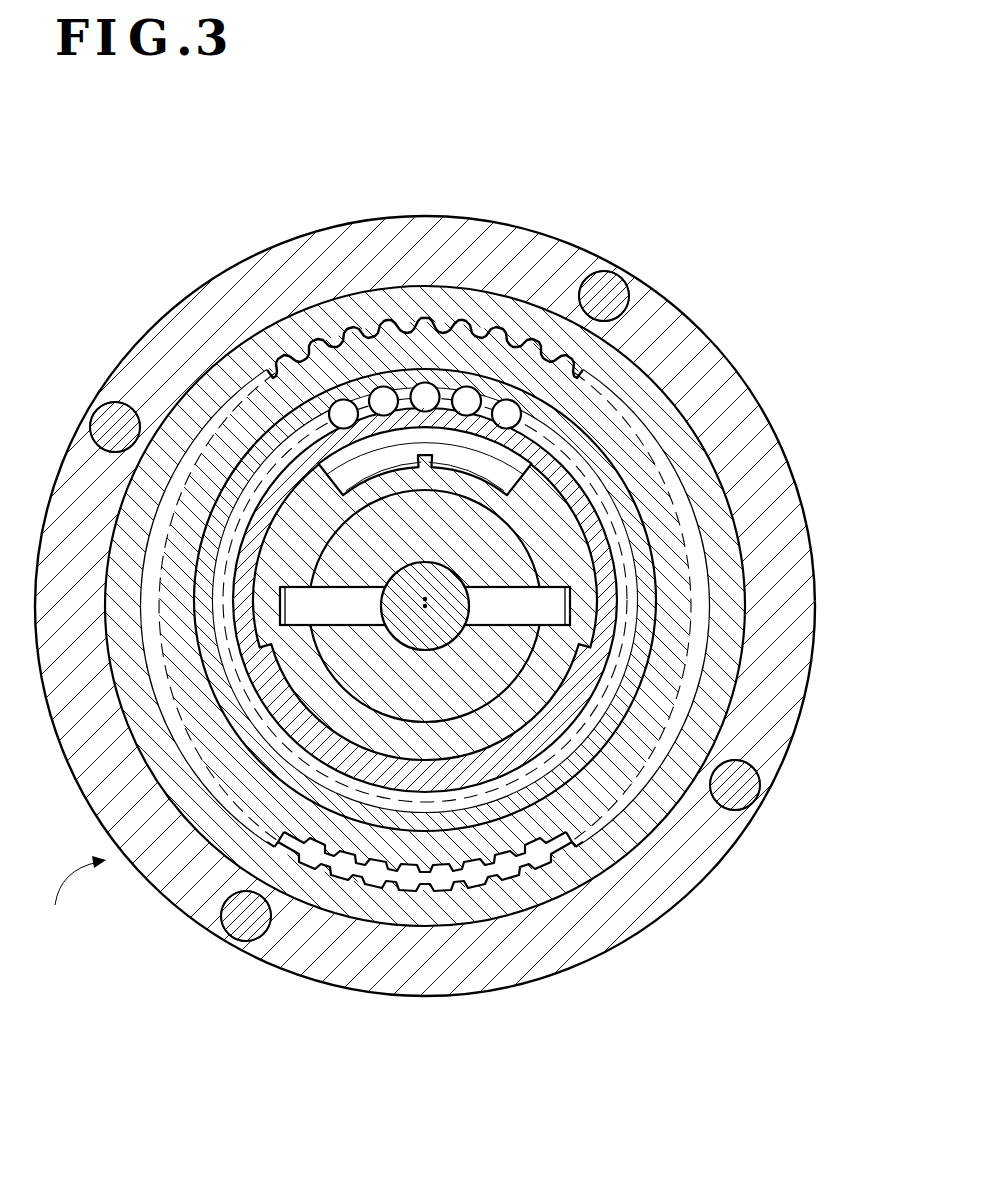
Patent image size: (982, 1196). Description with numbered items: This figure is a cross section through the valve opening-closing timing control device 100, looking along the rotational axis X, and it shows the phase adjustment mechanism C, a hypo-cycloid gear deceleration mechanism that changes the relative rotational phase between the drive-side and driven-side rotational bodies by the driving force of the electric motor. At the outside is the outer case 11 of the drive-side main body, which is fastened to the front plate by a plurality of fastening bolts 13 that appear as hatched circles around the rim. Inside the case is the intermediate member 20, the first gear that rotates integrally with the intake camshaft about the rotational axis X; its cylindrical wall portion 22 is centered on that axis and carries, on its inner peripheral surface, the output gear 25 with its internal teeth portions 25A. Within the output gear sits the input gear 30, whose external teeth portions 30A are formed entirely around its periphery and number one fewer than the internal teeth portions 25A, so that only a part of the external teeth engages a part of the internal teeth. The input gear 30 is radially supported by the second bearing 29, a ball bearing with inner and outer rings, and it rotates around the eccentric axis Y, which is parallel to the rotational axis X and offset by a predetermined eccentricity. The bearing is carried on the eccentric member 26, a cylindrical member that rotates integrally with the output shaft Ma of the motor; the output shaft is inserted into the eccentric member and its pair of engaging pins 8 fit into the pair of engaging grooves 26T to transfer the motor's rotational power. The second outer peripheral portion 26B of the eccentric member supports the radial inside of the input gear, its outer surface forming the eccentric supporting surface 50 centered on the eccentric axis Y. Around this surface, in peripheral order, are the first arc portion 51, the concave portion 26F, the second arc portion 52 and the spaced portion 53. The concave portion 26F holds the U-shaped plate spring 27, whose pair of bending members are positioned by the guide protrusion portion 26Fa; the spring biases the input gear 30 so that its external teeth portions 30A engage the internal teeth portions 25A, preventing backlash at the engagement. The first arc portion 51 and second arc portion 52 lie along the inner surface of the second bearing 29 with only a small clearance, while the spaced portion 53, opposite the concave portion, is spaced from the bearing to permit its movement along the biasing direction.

The valve opening-closing timing control device 100 is at (205, 177).
The outer case 11 is at (690, 895).
The fastening bolts 13 is at (627, 292).
The intermediate member 20 is at (425, 544).
The cylindrical wall portion 22 is at (245, 345).
The output gear 25 is at (330, 693).
The internal teeth portions 25A is at (462, 885).
The eccentric member 26 is at (562, 593).
The second outer peripheral portion 26B is at (603, 552).
The concave portion 26F is at (425, 494).
The guide protrusion portion 26Fa is at (470, 466).
The engaging grooves 26T is at (540, 595).
The plate spring 27 is at (376, 466).
The second bearing 29 is at (598, 520).
The input gear 30 is at (356, 677).
The external teeth portions 30A is at (425, 677).
The eccentric supporting surface 50 is at (458, 665).
The first arc portion 51 is at (215, 498).
The second arc portion 52 is at (597, 558).
The spaced portion 53 is at (330, 720).
The engaging pins 8 is at (425, 616).
The output shaft Ma is at (415, 645).
The rotational axis X is at (428, 612).
The eccentric axis Y is at (420, 599).
The phase adjustment mechanism C is at (69, 893).